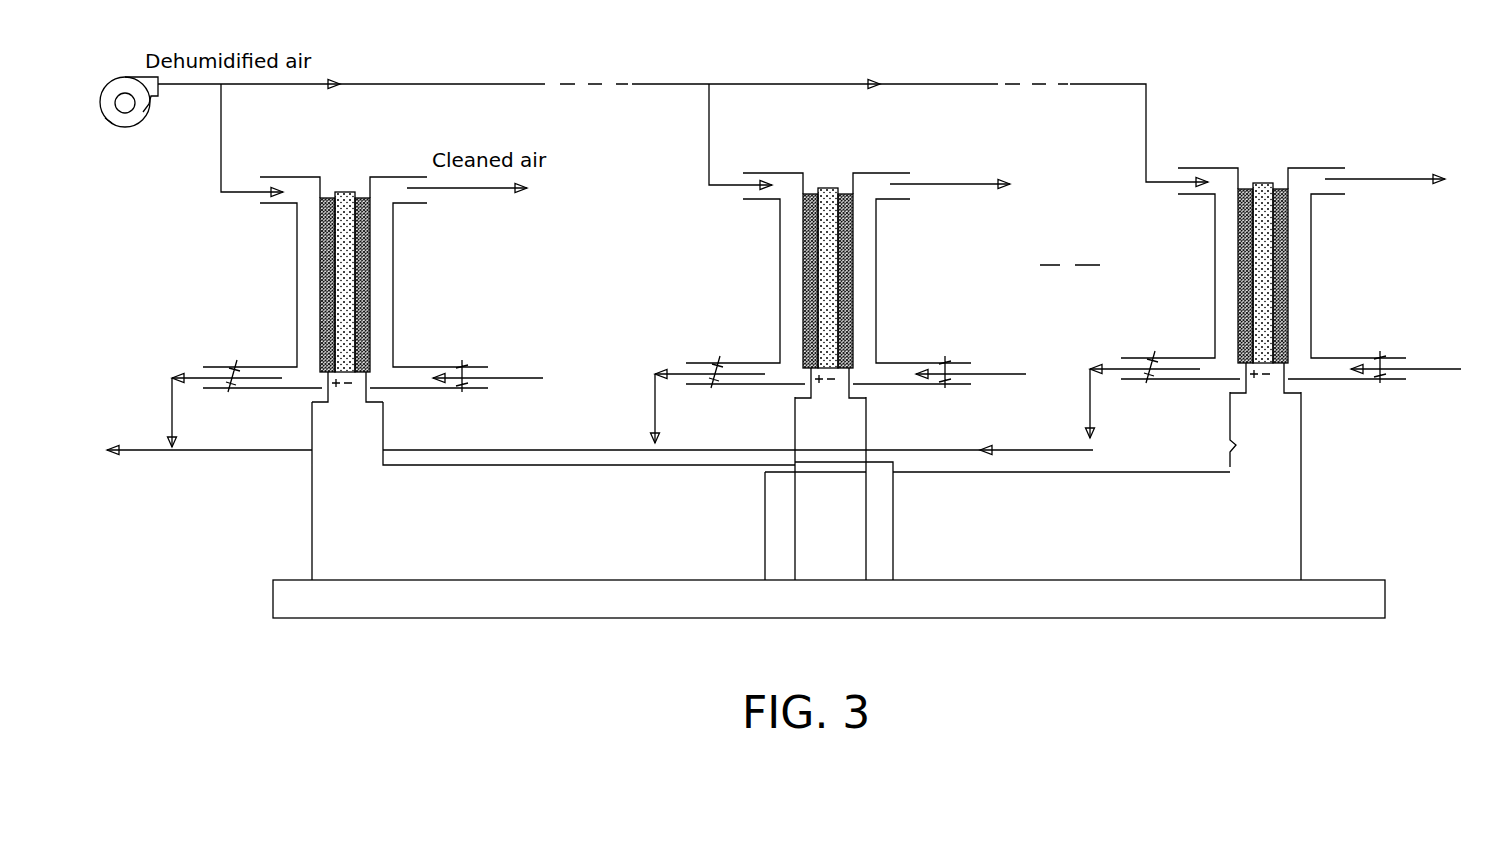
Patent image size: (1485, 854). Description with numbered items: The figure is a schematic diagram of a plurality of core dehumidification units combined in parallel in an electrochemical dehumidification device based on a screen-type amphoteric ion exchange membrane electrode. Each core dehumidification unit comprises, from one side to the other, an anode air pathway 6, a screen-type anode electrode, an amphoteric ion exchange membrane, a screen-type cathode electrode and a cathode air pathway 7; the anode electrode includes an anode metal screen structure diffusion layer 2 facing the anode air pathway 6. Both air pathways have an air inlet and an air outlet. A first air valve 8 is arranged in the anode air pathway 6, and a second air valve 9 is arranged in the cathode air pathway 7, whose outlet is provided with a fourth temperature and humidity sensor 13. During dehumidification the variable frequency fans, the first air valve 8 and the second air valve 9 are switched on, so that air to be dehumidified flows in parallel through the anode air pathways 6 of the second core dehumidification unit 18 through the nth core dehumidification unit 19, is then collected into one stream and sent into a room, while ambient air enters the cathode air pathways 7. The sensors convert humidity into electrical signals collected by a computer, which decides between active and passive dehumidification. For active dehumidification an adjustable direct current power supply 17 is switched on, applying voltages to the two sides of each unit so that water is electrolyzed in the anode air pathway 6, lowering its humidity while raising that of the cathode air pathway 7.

The anode metal screen structure diffusion layer 2 is at (327, 195).
The fourth temperature and humidity sensor 13 is at (362, 195).
The anode air pathway 6 is at (298, 298).
The cathode air pathway 7 is at (392, 298).
The first air valve 8 is at (233, 362).
The second air valve 9 is at (458, 360).
The adjustable direct current power supply 17 is at (829, 599).
The second core dehumidification unit 18 is at (870, 173).
The nth core dehumidification unit 19 is at (1317, 170).